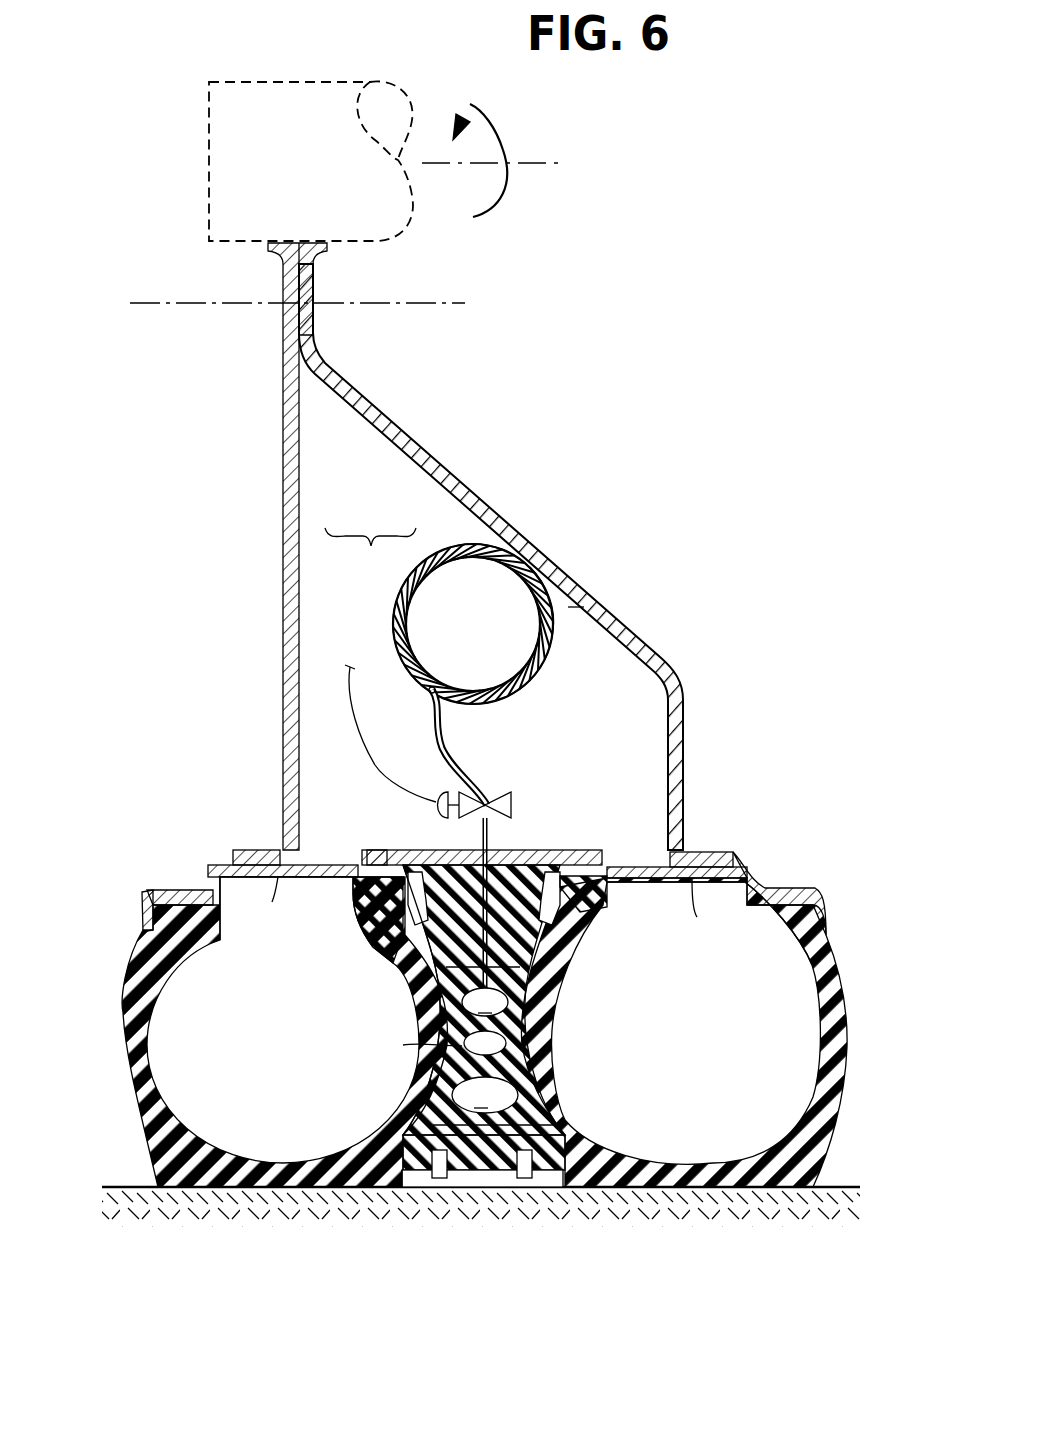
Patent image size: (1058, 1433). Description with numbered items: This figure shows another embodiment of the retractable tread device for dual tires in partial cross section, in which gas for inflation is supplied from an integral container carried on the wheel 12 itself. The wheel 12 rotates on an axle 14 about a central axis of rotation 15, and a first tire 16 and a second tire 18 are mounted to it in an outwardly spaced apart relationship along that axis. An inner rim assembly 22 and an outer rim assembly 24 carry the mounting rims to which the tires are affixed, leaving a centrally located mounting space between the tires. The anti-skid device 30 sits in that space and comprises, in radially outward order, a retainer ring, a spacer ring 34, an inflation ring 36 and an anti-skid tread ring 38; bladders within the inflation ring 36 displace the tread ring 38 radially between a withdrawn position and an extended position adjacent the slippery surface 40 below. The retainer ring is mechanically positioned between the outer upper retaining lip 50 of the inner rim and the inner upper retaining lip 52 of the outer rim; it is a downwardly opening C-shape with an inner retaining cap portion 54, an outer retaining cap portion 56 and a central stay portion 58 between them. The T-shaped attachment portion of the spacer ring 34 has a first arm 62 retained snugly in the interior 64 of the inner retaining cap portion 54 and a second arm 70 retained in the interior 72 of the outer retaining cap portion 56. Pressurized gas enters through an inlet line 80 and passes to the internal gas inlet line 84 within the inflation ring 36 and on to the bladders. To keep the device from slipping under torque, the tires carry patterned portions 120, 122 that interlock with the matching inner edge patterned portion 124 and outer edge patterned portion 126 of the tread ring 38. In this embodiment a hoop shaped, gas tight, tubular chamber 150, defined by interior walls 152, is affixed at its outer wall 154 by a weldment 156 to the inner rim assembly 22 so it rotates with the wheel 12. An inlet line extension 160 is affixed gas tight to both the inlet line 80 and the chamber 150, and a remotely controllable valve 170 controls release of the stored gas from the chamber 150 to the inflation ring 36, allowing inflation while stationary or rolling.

The wheel 12 is at (370, 546).
The axle 14 is at (305, 88).
The central axis of rotation 15 is at (538, 160).
The first tire 16 is at (848, 1010).
The second tire 18 is at (126, 1028).
The inner rim assembly 22 is at (440, 488).
The outer rim assembly 24 is at (300, 488).
The anti-skid device 30 is at (563, 849).
The spacer ring 34 is at (556, 966).
The inflation ring 36 is at (515, 1050).
The anti-skid tread ring 38 is at (483, 1162).
The slippery surface 40 is at (838, 1188).
The outer upper retaining lip 50 is at (612, 882).
The inner upper retaining lip 52 is at (352, 913).
The inner retaining cap portion 54 is at (608, 865).
The outer retaining cap portion 56 is at (356, 864).
The central stay portion 58 is at (527, 849).
The first arm 62 is at (586, 847).
The interior of inner retaining cap portion 64 is at (603, 872).
The second arm 70 is at (384, 851).
The interior of outer retaining cap portion 72 is at (354, 882).
The inlet line 80 is at (478, 840).
The internal gas inlet line 84 is at (428, 970).
The patterned portion of first tire 120 is at (567, 1167).
The patterned portion of second tire 122 is at (400, 1178).
The inner edge patterned portion 124 is at (550, 1177).
The outer edge patterned portion 126 is at (433, 1177).
The hoop shaped gas tight tubular chamber 150 is at (485, 648).
The interior walls 152 is at (447, 569).
The outer wall 154 is at (397, 580).
The weldment 156 is at (473, 533).
The inlet line extension 160 is at (468, 756).
The remotely controllable valve 170 is at (437, 800).